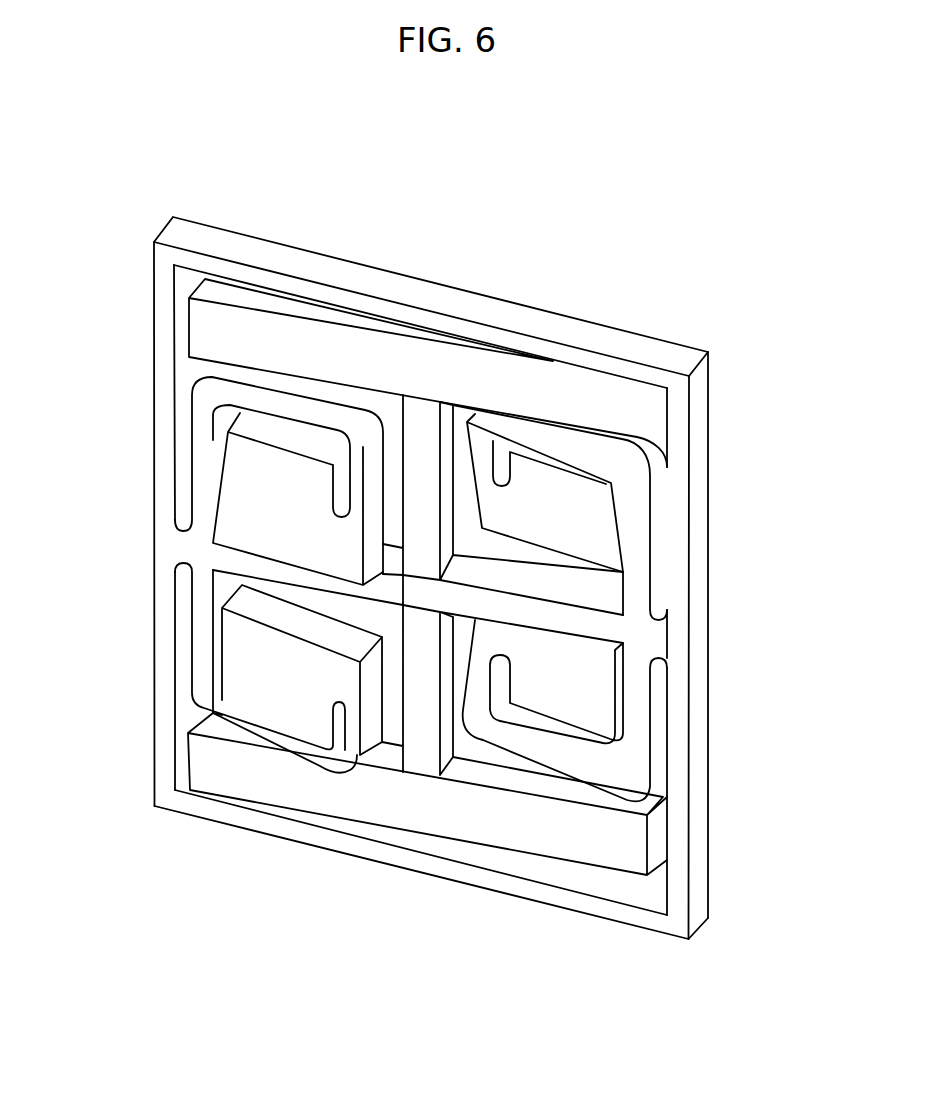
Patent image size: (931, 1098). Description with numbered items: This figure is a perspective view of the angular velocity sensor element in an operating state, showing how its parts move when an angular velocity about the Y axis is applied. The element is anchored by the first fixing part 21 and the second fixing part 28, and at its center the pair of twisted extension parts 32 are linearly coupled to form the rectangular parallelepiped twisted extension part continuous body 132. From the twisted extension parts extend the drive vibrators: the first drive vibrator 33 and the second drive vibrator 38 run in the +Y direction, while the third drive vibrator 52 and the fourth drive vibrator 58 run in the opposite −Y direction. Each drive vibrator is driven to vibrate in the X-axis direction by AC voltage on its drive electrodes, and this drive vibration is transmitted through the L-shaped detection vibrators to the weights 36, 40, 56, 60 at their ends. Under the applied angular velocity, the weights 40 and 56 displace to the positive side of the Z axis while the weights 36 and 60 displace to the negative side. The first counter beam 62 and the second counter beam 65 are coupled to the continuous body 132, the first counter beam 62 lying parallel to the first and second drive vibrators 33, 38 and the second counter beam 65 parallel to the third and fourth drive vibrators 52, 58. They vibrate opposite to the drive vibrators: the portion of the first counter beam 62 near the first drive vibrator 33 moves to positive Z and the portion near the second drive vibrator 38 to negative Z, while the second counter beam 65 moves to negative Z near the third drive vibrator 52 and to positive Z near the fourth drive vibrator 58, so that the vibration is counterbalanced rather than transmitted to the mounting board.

The first fixing part 21 is at (480, 378).
The second fixing part 28 is at (489, 830).
The twisted extension part 32 is at (547, 616).
The twisted extension part continuous body 132 is at (512, 641).
The first drive vibrator 33 is at (638, 552).
The weight 36 is at (572, 517).
The second drive vibrator 38 is at (200, 443).
The weight 40 is at (257, 483).
The third drive vibrator 52 is at (200, 645).
The weight 56 is at (250, 675).
The fourth drive vibrator 58 is at (638, 733).
The weight 60 is at (537, 673).
The first counter beam 62 is at (305, 287).
The second counter beam 65 is at (405, 857).